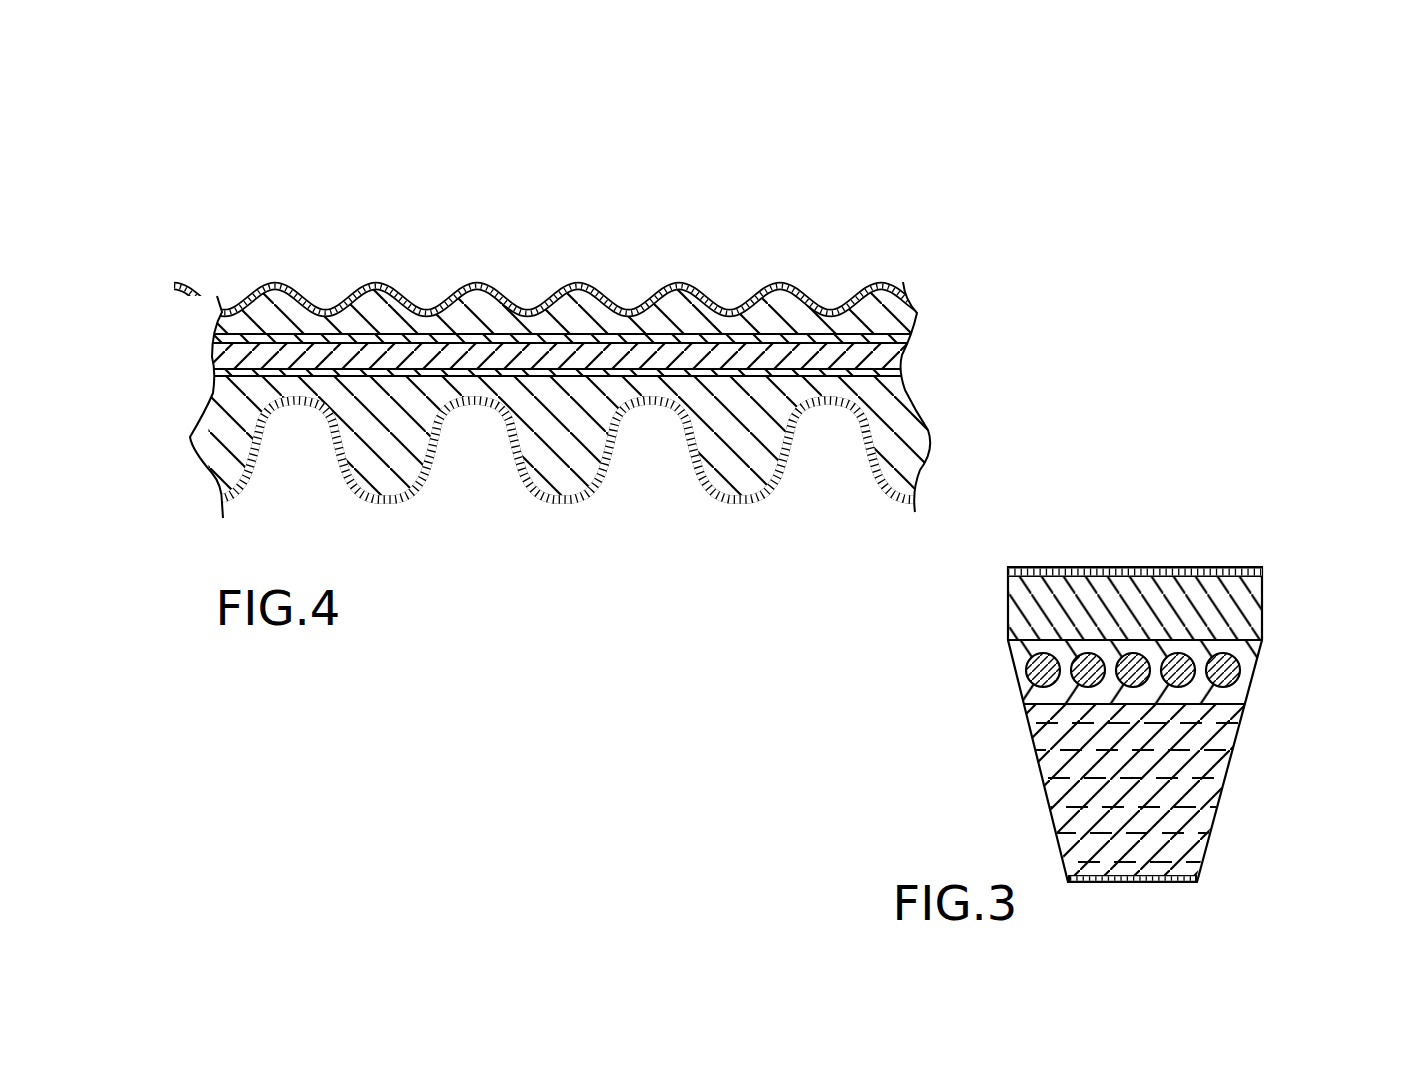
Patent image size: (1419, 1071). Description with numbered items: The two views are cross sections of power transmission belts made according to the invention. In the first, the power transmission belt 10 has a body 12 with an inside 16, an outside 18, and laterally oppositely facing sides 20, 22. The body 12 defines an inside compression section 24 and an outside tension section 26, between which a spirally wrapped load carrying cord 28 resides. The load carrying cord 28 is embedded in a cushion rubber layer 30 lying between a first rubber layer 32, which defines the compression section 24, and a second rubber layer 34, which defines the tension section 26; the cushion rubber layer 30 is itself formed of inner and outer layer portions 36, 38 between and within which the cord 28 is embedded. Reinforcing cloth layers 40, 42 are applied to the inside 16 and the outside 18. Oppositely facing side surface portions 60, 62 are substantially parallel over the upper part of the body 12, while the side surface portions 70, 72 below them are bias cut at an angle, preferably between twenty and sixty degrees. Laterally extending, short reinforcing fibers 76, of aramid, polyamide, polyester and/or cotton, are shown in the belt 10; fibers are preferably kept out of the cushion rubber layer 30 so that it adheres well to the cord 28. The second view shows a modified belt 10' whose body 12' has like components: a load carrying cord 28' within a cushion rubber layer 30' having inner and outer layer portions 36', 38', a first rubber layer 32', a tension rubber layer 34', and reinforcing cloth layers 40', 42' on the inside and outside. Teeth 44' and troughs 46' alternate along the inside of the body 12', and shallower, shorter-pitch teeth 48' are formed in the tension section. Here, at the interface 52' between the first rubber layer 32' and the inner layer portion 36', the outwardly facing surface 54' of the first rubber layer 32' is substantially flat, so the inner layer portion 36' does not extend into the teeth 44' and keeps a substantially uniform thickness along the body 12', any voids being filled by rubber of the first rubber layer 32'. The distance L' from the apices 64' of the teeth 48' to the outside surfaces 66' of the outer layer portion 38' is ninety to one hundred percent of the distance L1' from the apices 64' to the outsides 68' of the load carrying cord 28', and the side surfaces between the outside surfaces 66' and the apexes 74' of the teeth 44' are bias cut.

In FIG. 4, the power transmission belt 10' is at (856, 202).
In FIG. 4, the body 12' is at (570, 459).
In FIG. 4, the load carrying cord 28' is at (621, 398).
In FIG. 4, the cushion rubber layer 30' is at (553, 267).
In FIG. 4, the first rubber layer 32' is at (488, 490).
In FIG. 4, the tension rubber layer 34' is at (553, 268).
In FIG. 4, the inner layer portion 36' is at (909, 456).
In FIG. 4, the outer layer portion 38' is at (502, 275).
In FIG. 4, the bottom fabric layer 40' is at (570, 475).
In FIG. 4, the undulation crest 42' is at (608, 227).
In FIG. 4, the teeth 44' is at (573, 492).
In FIG. 4, the troughs 46' is at (651, 473).
In FIG. 4, the teeth 48' is at (797, 262).
In FIG. 4, the interface 52' is at (784, 464).
In FIG. 4, the outwardly facing surface 54' is at (650, 296).
In FIG. 4, the apices 64' is at (268, 225).
In FIG. 4, the outside surfaces 66' is at (567, 266).
In FIG. 4, the outsides 68' is at (710, 266).
In FIG. 4, the apexes 74' is at (752, 548).
In FIG. 4, the distance L' is at (205, 289).
In FIG. 4, the distance L1' is at (978, 296).
In FIG. 3, the power transmission belt 10 is at (1335, 642).
In FIG. 3, the body 12 is at (1135, 822).
In FIG. 3, the inside 16 is at (1157, 883).
In FIG. 3, the outside 18 is at (1052, 566).
In FIG. 3, the side 20 is at (1227, 773).
In FIG. 3, the side 22 is at (1034, 750).
In FIG. 3, the inside compression section 24 is at (1034, 820).
In FIG. 3, the outside tension section 26 is at (1276, 611).
In FIG. 3, the load carrying cord 28 is at (1090, 672).
In FIG. 3, the cushion rubber layer 30 is at (1072, 618).
In FIG. 3, the first rubber layer 32 is at (1264, 720).
In FIG. 3, the second rubber layer 34 is at (1115, 557).
In FIG. 3, the inner layer portion 36 is at (984, 719).
In FIG. 3, the outer layer portion 38 is at (1184, 563).
In FIG. 3, the reinforcing cloth layer 40 is at (1132, 919).
In FIG. 3, the reinforcing cloth layer 42 is at (1135, 519).
In FIG. 3, the side surface portion 60 is at (1013, 618).
In FIG. 3, the side surface portion 62 is at (1263, 572).
In FIG. 3, the side surface portion 70 is at (1042, 782).
In FIG. 3, the side surface portion 72 is at (1203, 871).
In FIG. 3, the reinforcing fibers 76 is at (1100, 807).